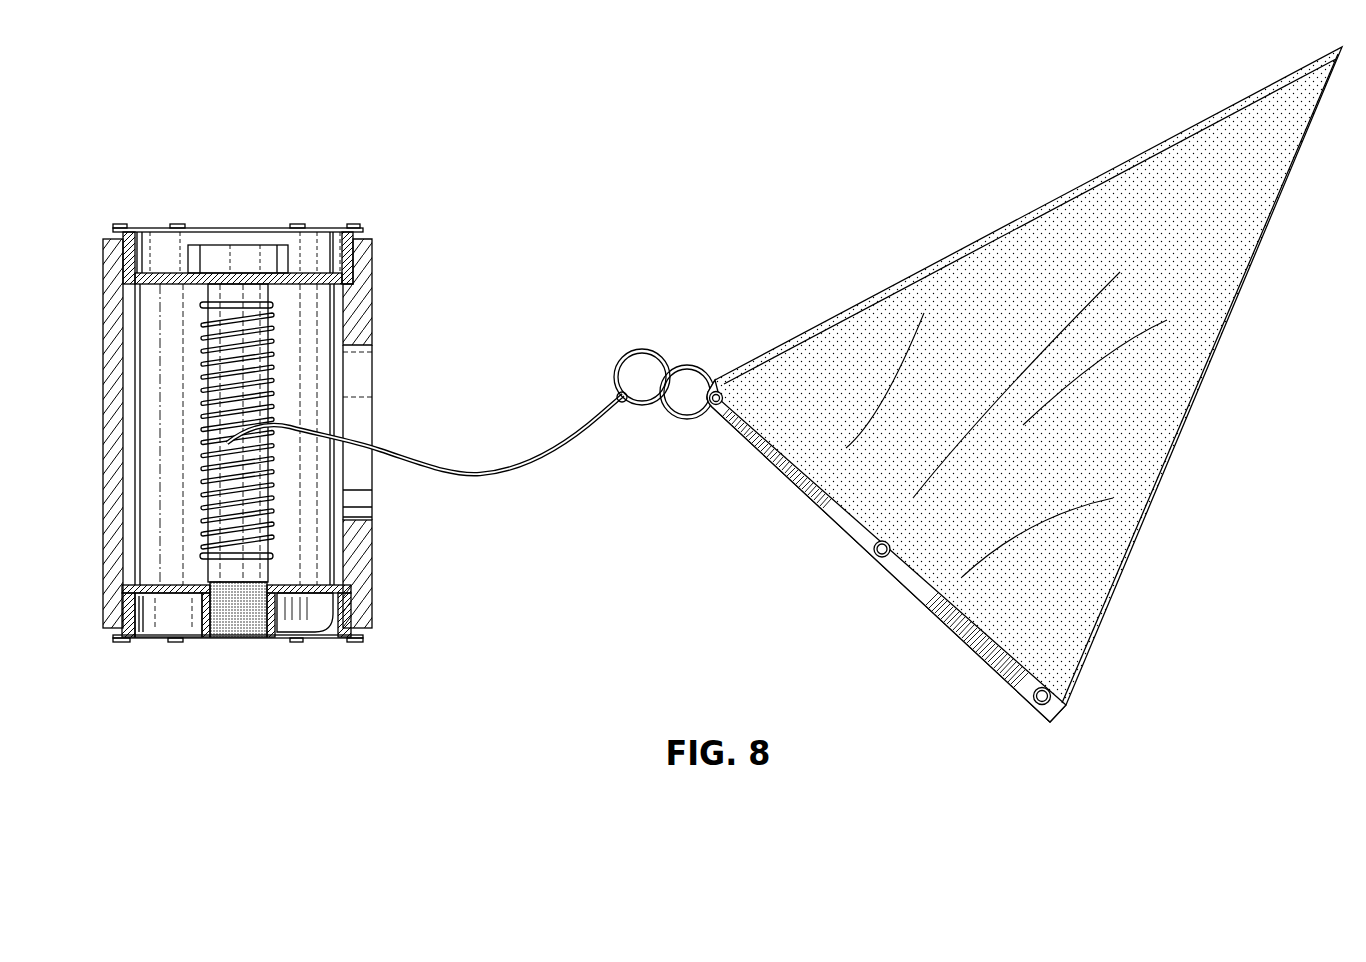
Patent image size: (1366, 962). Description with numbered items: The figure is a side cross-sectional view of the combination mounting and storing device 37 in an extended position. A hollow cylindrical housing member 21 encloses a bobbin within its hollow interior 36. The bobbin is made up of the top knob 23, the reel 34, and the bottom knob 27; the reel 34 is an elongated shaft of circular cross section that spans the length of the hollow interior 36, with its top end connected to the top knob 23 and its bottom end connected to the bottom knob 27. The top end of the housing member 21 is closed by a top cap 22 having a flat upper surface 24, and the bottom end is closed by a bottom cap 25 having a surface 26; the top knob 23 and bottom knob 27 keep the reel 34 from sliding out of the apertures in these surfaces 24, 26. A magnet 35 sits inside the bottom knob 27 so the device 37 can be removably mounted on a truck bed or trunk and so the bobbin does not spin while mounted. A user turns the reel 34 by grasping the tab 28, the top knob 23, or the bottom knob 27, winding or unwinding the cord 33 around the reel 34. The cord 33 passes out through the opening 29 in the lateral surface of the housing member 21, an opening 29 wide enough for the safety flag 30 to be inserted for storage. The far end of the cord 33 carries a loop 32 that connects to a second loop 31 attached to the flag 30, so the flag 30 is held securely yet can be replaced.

The housing member 21 is at (102, 263).
The top cap 22 is at (320, 245).
The top knob 23 is at (240, 255).
The flat upper surface 24 is at (182, 284).
The bottom cap 25 is at (170, 610).
The surface 26 is at (170, 585).
The bottom knob 27 is at (280, 612).
The tab 28 is at (303, 610).
The opening 29 is at (355, 385).
The safety flag 30 is at (1212, 130).
The second loop 31 is at (690, 365).
The loop 32 is at (625, 350).
The cord 33 is at (575, 427).
The reel 34 is at (255, 289).
The magnet 35 is at (217, 625).
The hollow interior 36 is at (172, 302).
The combination mounting and storing device 37 is at (425, 213).